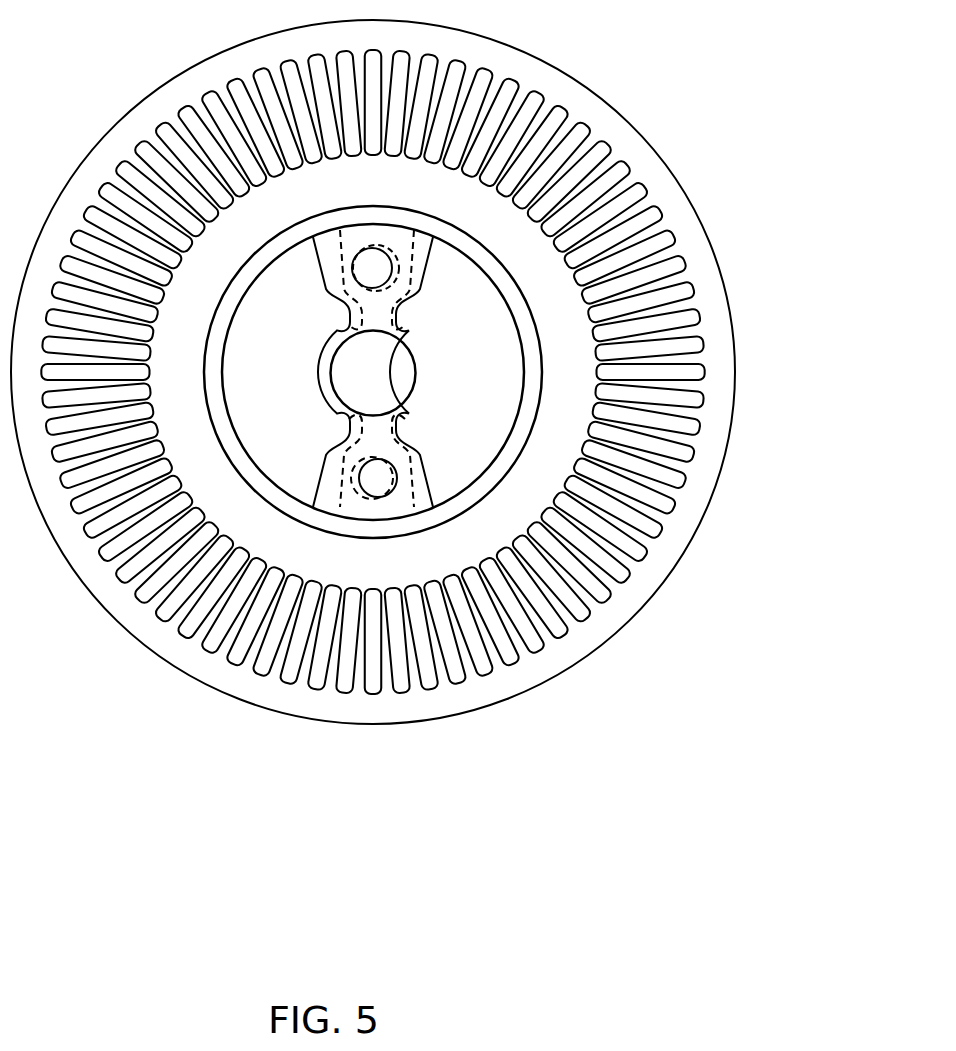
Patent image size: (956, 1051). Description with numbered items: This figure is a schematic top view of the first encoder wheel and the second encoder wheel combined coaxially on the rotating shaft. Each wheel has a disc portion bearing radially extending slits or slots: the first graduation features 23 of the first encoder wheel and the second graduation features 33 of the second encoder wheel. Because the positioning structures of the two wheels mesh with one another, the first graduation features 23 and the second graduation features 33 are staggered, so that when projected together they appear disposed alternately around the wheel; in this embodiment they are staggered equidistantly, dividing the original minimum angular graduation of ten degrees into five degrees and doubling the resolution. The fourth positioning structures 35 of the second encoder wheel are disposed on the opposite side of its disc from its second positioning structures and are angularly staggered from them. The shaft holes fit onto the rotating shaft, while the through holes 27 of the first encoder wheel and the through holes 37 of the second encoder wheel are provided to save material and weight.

The second graduation feature 33 is at (486, 72).
The first graduation feature 23 is at (607, 146).
The through hole 37 is at (330, 481).
The fourth positioning structure 35 is at (389, 250).
The through hole 27 is at (342, 502).